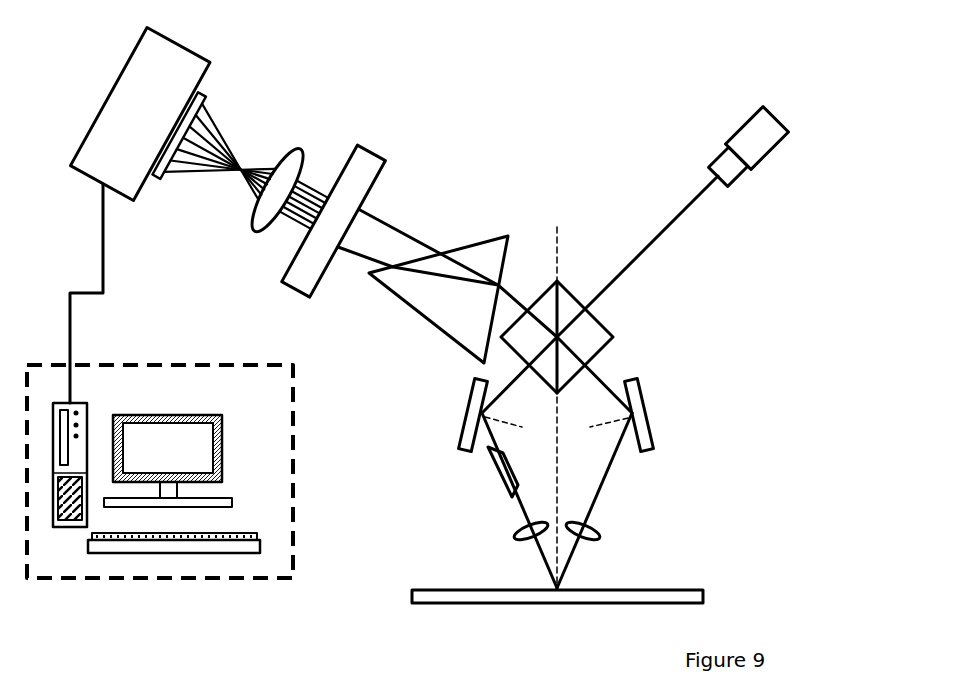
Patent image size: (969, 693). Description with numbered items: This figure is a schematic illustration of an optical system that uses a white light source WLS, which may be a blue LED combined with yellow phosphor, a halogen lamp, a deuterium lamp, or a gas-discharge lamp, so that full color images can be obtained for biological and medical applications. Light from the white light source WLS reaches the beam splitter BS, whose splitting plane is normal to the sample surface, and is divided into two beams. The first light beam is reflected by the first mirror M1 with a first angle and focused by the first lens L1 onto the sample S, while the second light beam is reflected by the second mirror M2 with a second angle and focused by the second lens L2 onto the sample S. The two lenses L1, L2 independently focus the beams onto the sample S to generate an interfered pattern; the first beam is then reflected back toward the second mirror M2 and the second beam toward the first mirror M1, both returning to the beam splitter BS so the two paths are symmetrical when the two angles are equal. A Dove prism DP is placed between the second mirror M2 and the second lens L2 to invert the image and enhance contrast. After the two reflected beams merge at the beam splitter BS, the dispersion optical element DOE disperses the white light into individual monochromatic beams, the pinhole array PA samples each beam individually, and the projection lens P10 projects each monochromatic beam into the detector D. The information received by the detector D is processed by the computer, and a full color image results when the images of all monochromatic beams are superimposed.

The detector D is at (187, 140).
The projection lens P10 is at (277, 177).
The pinhole array PA is at (340, 210).
The dispersion optical element DOE is at (438, 299).
The beam splitter BS is at (557, 330).
The white light source WLS is at (758, 148).
The first mirror M1 is at (636, 414).
The second mirror M2 is at (476, 414).
The Dove prism DP is at (516, 472).
The first lens L1 is at (596, 534).
The second lens L2 is at (518, 534).
The sample S is at (557, 586).
The element computer is at (160, 471).